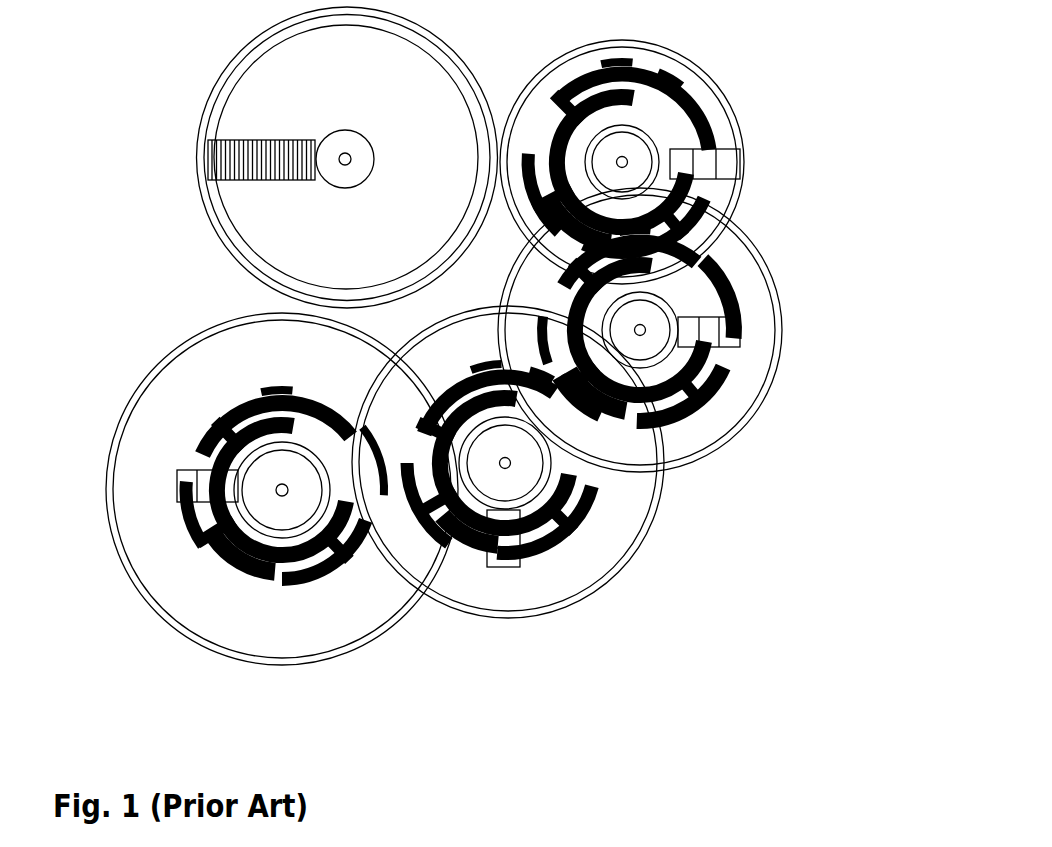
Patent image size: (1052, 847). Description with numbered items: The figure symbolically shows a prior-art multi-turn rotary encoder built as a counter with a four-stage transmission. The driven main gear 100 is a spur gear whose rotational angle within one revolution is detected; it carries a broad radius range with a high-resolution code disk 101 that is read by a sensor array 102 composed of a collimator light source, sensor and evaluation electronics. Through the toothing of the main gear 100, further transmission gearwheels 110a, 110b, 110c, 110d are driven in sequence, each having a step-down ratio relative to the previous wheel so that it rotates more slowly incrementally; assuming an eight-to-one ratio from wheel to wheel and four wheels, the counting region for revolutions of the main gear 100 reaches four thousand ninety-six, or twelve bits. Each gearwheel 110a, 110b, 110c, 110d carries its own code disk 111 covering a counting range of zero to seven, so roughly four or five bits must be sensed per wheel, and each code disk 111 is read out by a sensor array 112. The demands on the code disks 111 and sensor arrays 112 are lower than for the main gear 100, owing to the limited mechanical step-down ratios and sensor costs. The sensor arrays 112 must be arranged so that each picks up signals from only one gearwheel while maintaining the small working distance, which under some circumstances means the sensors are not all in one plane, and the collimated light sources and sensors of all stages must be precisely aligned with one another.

The main gear 100 is at (198, 113).
The high-resolution code disk 101 is at (305, 88).
The sensor array 102 is at (230, 172).
The transmission gearwheel 110a is at (722, 100).
The transmission gearwheel 110b is at (766, 287).
The transmission gearwheel 110c is at (620, 558).
The transmission gearwheel 110d is at (110, 490).
The code disk 111 is at (637, 82).
The sensor array 112 is at (718, 172).